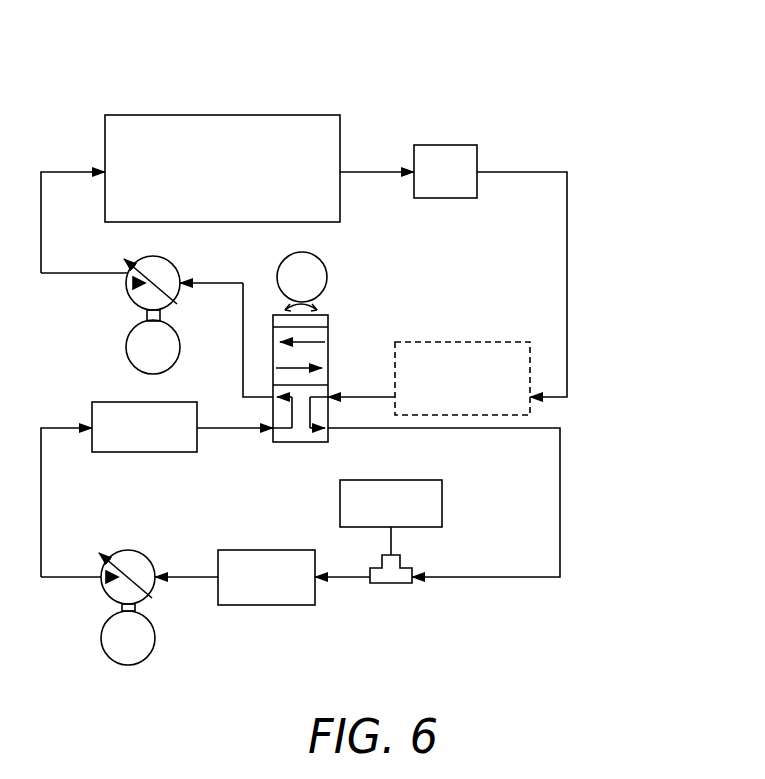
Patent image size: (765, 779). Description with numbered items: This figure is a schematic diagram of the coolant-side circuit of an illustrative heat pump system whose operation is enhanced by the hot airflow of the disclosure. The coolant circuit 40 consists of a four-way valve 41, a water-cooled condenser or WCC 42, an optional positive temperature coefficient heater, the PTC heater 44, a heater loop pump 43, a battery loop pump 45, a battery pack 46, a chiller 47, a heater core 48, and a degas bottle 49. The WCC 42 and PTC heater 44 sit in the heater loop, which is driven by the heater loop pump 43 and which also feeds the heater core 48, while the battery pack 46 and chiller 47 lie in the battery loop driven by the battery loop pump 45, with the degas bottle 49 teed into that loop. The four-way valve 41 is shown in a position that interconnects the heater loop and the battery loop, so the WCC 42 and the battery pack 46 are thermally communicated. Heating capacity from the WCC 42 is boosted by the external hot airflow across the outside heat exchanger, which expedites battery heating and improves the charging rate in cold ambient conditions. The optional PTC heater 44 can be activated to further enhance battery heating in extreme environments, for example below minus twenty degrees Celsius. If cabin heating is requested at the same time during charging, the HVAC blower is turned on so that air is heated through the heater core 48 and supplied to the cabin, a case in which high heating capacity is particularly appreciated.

The coolant circuit 40 is at (622, 93).
The four-way valve 41 is at (328, 352).
The water-cooled condenser (WCC) 42 is at (342, 120).
The heater loop pump 43 is at (128, 297).
The positive temperature coefficient (PTC) heater 44 is at (445, 145).
The battery loop pump 45 is at (105, 650).
The battery pack 46 is at (127, 453).
The chiller 47 is at (267, 605).
The heater core 48 is at (508, 340).
The degas bottle 49 is at (442, 505).